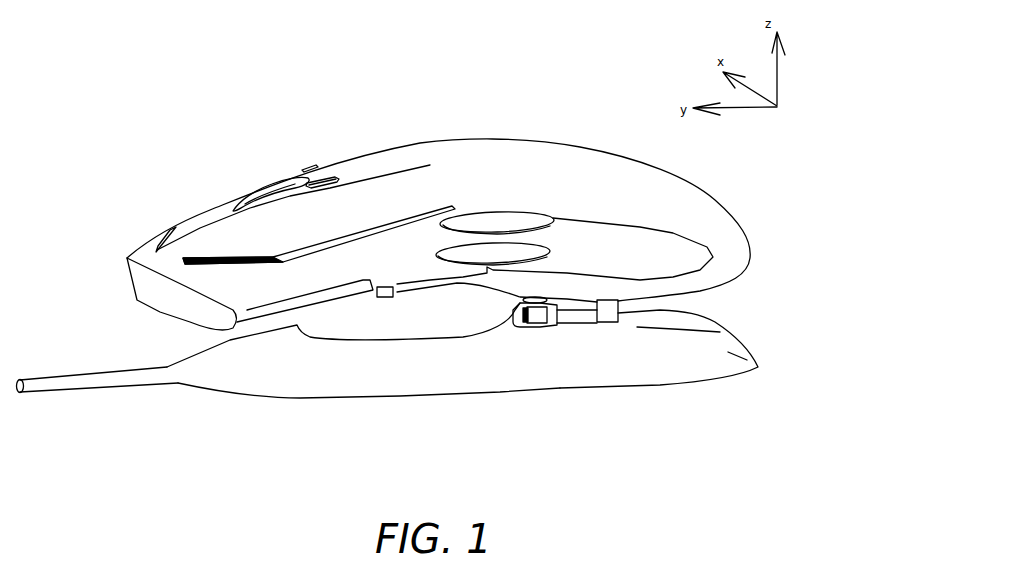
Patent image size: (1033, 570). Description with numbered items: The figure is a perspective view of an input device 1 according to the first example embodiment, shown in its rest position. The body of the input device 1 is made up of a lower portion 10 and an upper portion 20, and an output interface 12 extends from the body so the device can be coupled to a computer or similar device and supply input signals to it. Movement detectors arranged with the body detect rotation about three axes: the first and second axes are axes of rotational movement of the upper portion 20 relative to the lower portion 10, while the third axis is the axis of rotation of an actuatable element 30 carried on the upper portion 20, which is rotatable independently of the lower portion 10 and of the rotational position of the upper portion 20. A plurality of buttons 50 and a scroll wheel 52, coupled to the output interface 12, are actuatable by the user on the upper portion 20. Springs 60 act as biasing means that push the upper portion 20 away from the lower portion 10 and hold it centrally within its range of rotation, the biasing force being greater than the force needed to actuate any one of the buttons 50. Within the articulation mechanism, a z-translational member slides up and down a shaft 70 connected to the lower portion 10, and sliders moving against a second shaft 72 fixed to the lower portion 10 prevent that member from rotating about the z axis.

The input device 1 is at (500, 120).
The lower portion 10 is at (750, 348).
The output interface 12 is at (70, 383).
The upper portion 20 is at (673, 188).
The actuatable element 30 is at (393, 327).
The buttons 50 is at (177, 228).
The scroll wheel 52 is at (257, 183).
The springs 60 is at (527, 323).
The shaft 70 is at (540, 311).
The second shaft 72 is at (610, 310).